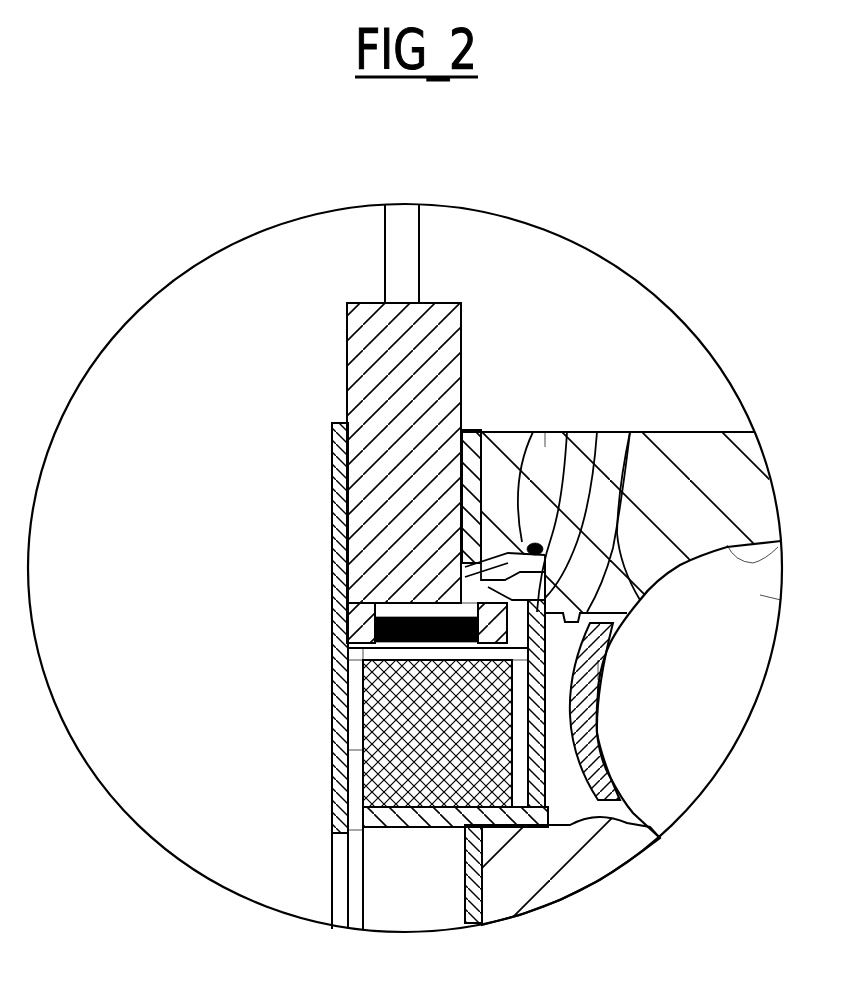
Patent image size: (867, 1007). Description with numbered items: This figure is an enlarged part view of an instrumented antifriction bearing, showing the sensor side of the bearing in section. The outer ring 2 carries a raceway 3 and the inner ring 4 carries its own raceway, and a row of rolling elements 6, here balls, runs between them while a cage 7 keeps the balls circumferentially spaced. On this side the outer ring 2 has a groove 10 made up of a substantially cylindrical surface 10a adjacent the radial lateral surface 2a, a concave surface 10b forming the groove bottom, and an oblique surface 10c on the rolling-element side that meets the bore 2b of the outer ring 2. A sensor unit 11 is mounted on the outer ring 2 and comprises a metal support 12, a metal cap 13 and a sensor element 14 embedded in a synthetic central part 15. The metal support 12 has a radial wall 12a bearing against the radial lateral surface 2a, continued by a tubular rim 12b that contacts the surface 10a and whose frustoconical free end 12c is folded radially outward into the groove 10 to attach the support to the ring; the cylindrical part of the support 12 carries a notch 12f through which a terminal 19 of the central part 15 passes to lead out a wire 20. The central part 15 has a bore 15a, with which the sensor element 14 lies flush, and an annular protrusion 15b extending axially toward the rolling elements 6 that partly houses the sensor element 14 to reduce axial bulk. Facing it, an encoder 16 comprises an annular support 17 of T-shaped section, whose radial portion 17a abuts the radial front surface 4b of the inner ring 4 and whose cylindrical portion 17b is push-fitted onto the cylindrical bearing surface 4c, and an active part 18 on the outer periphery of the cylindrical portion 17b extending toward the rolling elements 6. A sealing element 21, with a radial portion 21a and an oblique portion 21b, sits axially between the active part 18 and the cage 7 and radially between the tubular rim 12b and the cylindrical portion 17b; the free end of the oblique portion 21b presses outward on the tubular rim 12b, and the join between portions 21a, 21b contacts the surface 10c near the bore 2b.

The outer ring 2 is at (755, 495).
The radial lateral surface 2a is at (508, 447).
The bore 2b is at (633, 447).
The raceway 3 is at (745, 545).
The inner ring 4 is at (600, 873).
The radial front surface 4b is at (482, 923).
The cylindrical bearing surface 4c is at (657, 840).
The rolling elements 6 is at (762, 595).
The cage 7 is at (600, 672).
The groove 10 is at (540, 547).
The cylindrical surface 10a is at (498, 447).
The concave surface 10b is at (540, 447).
The oblique surface 10c is at (597, 447).
The sensor unit 11 is at (322, 437).
The metal support 12 is at (480, 447).
The radial wall 12a is at (477, 480).
The tubular rim 12b is at (477, 530).
The free end 12c is at (477, 575).
The notch 12f is at (462, 443).
The metal cap 13 is at (397, 552).
The sensor element 14 is at (375, 625).
The central part 15 is at (333, 550).
The bore 15a is at (353, 650).
The annular protrusion 15b is at (467, 667).
The encoder 16 is at (353, 725).
The annular support 17 is at (360, 843).
The radial portion 17a is at (467, 870).
The cylindrical portion 17b is at (413, 817).
The active part 18 is at (373, 763).
The terminal 19 is at (370, 340).
The wire 20 is at (385, 253).
The sealing element 21 is at (540, 727).
The radial portion 21a is at (540, 780).
The oblique portion 21b is at (600, 647).